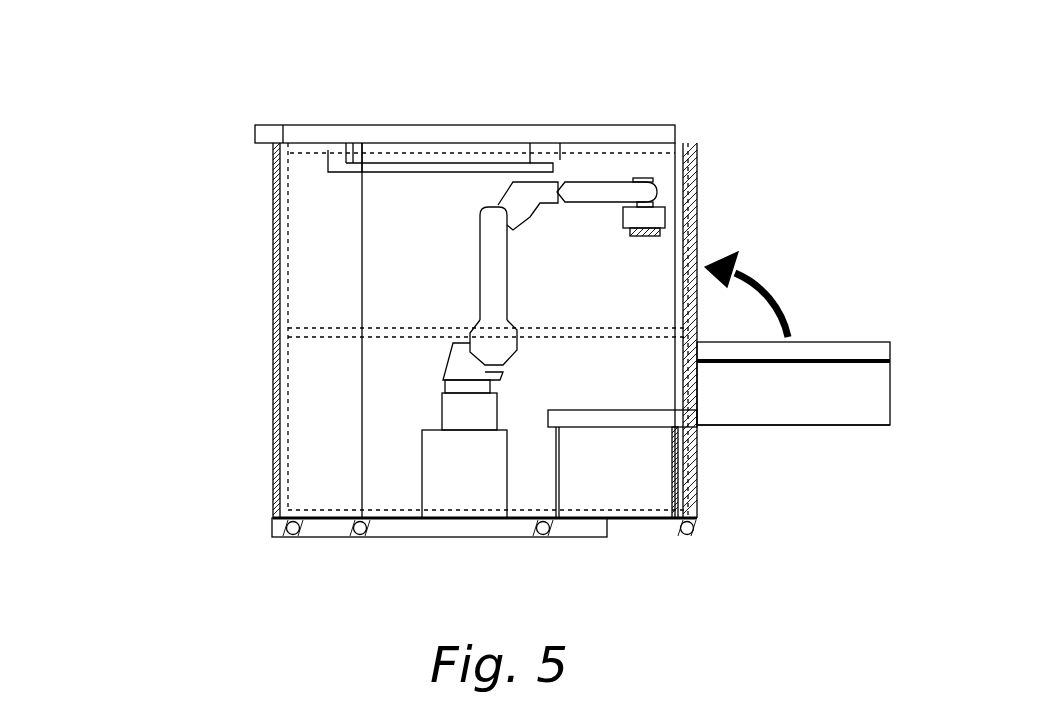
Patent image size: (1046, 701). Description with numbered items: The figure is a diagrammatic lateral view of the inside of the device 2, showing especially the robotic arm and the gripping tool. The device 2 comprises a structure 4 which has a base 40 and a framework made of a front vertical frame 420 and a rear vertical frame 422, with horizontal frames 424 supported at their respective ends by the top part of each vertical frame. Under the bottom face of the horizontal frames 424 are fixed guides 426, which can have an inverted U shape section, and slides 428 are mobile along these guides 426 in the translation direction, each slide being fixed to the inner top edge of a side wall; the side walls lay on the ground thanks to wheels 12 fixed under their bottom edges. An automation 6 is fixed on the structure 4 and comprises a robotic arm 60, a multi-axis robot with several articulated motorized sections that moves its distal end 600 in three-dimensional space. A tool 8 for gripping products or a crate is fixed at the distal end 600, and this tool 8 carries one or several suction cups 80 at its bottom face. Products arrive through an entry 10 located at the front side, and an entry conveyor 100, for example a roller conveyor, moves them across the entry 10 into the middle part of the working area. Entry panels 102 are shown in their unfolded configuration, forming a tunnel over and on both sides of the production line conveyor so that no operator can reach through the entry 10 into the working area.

The device 2 is at (225, 102).
The structure 4 is at (505, 343).
The automation 6 is at (417, 485).
The tool 8 is at (655, 217).
The entry 10 is at (700, 386).
The wheels 12 is at (695, 528).
The base 40 is at (600, 527).
The robotic arm 60 is at (488, 253).
The suction cups 80 is at (665, 236).
The entry conveyor 100 is at (630, 417).
The entry panels 102 is at (790, 415).
The front vertical frame 420 is at (682, 173).
The rear vertical frame 422 is at (313, 415).
The horizontal frames 424 is at (657, 133).
The guides 426 is at (323, 153).
The slides 428 is at (347, 176).
The distal end 600 is at (657, 188).